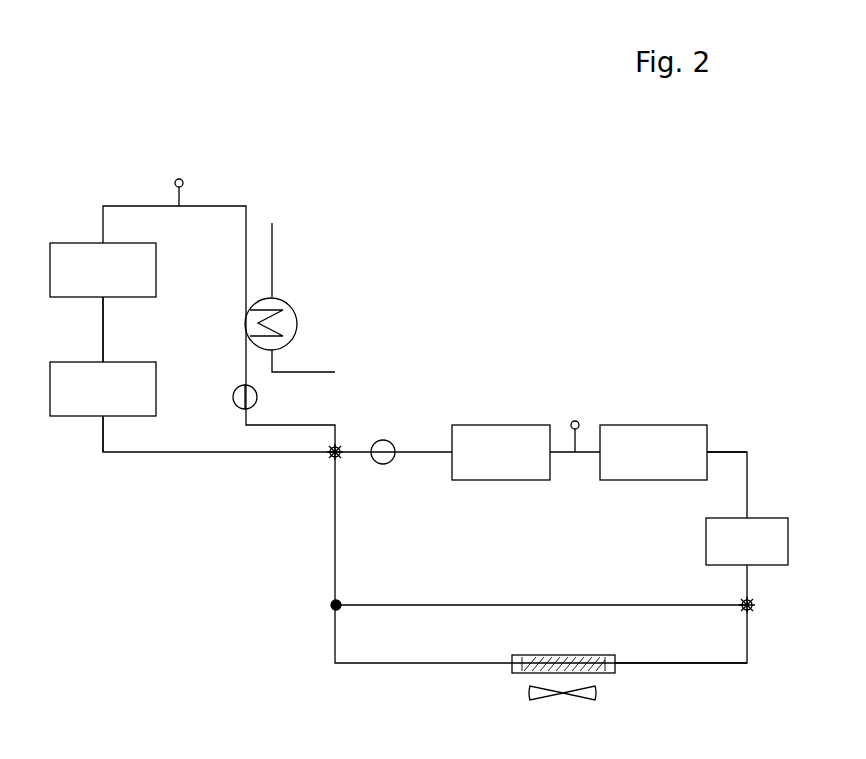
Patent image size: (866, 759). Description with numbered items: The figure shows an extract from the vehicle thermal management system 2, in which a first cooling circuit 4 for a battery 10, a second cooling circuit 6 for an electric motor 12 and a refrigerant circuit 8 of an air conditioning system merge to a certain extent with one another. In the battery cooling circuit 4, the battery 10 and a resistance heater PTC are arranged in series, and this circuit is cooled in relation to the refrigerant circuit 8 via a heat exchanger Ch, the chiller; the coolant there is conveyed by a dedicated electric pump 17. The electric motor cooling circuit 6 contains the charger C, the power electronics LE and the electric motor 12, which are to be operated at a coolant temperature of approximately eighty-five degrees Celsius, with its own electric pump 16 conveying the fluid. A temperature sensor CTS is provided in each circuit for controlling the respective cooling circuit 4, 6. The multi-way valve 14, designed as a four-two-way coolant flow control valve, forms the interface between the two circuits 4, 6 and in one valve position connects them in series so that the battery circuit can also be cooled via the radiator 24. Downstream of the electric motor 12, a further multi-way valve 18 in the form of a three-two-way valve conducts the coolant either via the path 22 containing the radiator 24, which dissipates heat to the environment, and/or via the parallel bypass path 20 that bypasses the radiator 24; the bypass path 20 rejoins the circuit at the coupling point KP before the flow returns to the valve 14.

The thermal management system 2 is at (202, 70).
The first cooling circuit 4 is at (160, 490).
The second cooling circuit 6 is at (775, 443).
The refrigerant circuit 8 is at (320, 255).
The heat exchanger Ch is at (312, 305).
The resistance heater PTC is at (100, 258).
The temperature sensor CTS is at (162, 172).
The battery 10 is at (102, 375).
The electric motor 12 is at (750, 532).
The multi-way valve 14 is at (313, 467).
The electric pump 16 is at (383, 440).
The electric pump 17 is at (258, 397).
The further multi-way valve 18 is at (757, 607).
The bypass path 20 is at (493, 603).
The path 22 is at (685, 663).
The radiator 24 is at (540, 663).
The charger C is at (488, 450).
The power electronics LE is at (640, 448).
The coupling point KP is at (330, 610).